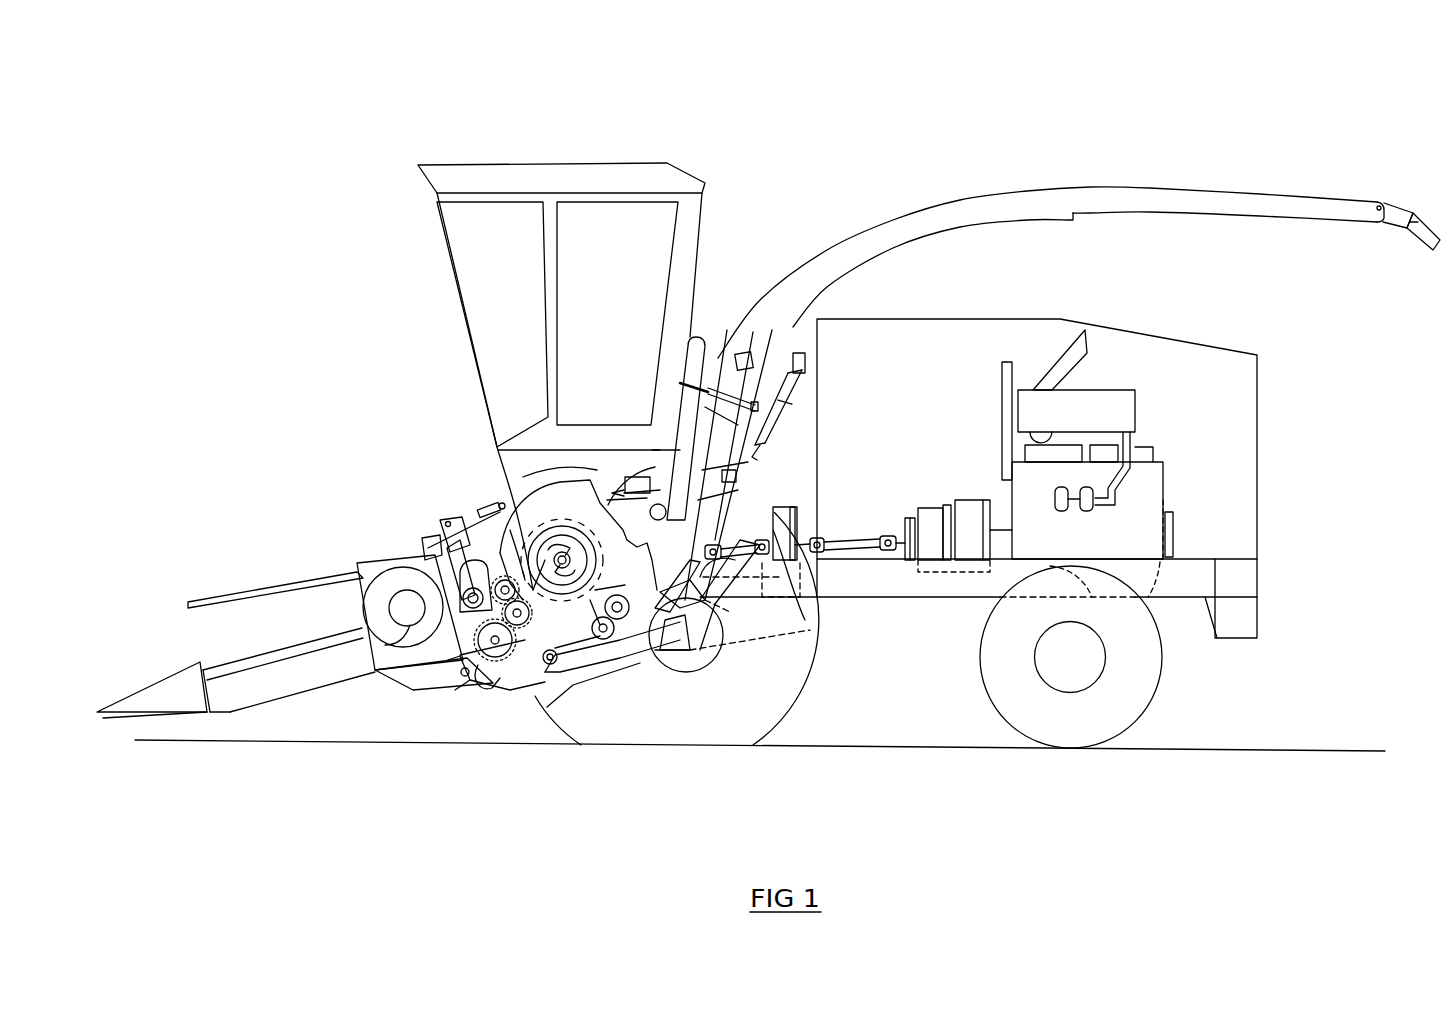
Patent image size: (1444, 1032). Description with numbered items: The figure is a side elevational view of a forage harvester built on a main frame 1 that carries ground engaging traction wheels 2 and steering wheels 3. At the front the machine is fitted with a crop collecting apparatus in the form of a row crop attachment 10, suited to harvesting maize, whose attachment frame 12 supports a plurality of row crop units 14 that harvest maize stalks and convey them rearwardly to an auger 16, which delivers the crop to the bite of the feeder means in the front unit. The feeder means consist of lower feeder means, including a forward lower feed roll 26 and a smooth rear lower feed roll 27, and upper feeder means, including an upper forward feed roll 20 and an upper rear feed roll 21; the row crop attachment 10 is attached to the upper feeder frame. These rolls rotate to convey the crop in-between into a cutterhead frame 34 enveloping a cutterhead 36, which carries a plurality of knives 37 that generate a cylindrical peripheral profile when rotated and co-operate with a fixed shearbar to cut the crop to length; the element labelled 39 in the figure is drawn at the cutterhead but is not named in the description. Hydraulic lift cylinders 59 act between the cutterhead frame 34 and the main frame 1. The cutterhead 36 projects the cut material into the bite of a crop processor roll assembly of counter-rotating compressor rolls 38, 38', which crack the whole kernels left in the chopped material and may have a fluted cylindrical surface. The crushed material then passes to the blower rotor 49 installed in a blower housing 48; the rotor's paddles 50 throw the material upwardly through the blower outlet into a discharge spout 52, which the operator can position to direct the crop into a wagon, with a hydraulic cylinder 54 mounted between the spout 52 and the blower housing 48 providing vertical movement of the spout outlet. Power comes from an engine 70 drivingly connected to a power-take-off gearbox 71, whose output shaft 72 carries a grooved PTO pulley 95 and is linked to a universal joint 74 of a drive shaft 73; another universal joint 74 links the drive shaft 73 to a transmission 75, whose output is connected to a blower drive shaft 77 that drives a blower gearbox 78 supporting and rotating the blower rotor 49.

The main frame 1 is at (938, 610).
The ground engaging traction wheels 2 is at (684, 735).
The steering wheels 3 is at (1068, 735).
The row crop attachment 10 is at (277, 552).
The attachment frame 12 is at (430, 683).
The row crop units 14 is at (225, 700).
The auger 16 is at (393, 575).
The upper forward feed roll 20 is at (438, 545).
The upper rear feed roll 21 is at (475, 540).
The forward lower feed roll 26 is at (497, 650).
The rear lower feed roll 27 is at (519, 625).
The cutterhead frame 34 is at (505, 474).
The cutterhead 36 is at (510, 530).
The knives 37 is at (523, 470).
The compressor roll 38 is at (626, 648).
The compressor roll 38' is at (611, 667).
The cutterhead 39 is at (562, 552).
The blower housing 48 is at (693, 626).
The blower rotor 49 is at (700, 600).
The paddles 50 is at (727, 520).
The discharge spout 52 is at (1083, 135).
The hydraulic cylinder 54 is at (782, 412).
The hydraulic lift cylinders 59 is at (582, 660).
The engine 70 is at (1152, 482).
The power-take-off gearbox 71 is at (978, 510).
The output shaft 72 is at (888, 535).
The drive shaft 73 is at (840, 548).
The universal joint 74 is at (885, 552).
The transmission 75 is at (783, 560).
The blower drive shaft 77 is at (728, 548).
The blower gearbox 78 is at (712, 577).
The grooved PTO pulley 95 is at (925, 505).